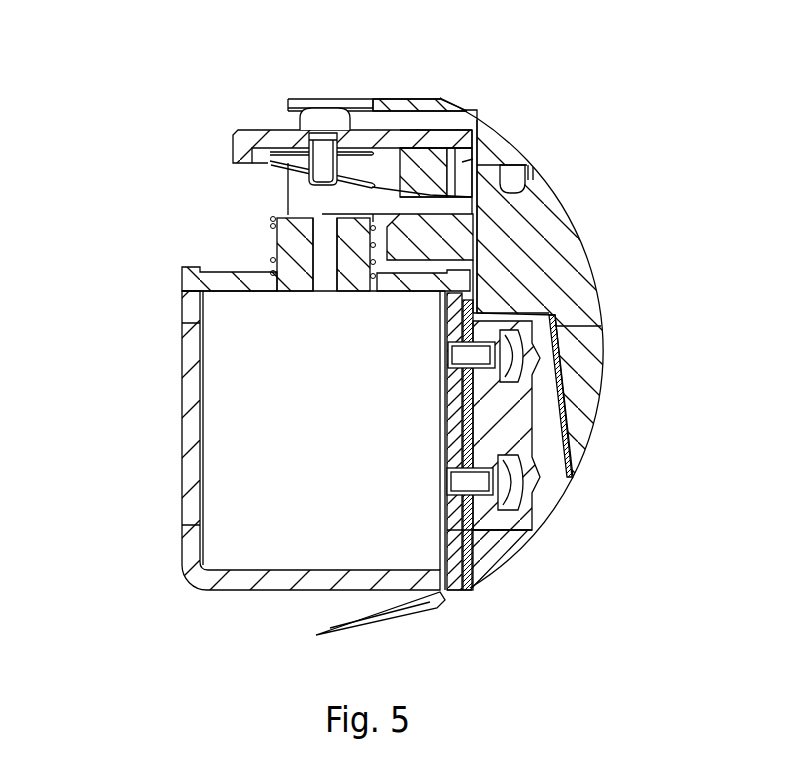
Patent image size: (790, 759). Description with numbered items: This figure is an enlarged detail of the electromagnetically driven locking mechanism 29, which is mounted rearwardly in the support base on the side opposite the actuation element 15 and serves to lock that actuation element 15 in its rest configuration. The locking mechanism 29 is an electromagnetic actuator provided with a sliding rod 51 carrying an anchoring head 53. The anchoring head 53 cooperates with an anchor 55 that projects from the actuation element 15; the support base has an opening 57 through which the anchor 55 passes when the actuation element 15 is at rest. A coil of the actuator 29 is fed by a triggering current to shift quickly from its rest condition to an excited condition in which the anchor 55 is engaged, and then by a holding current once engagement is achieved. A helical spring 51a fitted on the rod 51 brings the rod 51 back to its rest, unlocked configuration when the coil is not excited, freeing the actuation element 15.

The actuation element 15 is at (573, 249).
The electromagnetically driven locking mechanism 29 is at (143, 533).
The sliding rod 51 is at (277, 242).
The helical spring 51a is at (278, 172).
The anchoring head 53 is at (507, 152).
The anchor 55 is at (428, 228).
The opening 57 is at (520, 197).